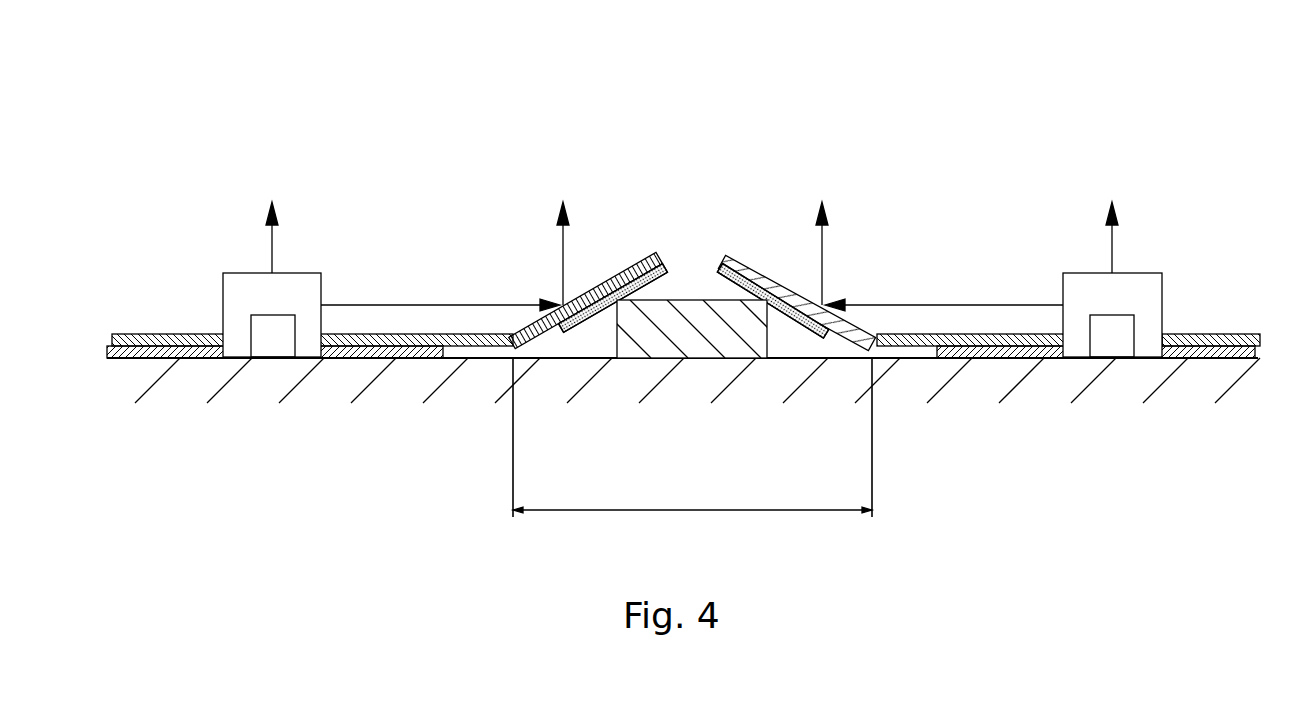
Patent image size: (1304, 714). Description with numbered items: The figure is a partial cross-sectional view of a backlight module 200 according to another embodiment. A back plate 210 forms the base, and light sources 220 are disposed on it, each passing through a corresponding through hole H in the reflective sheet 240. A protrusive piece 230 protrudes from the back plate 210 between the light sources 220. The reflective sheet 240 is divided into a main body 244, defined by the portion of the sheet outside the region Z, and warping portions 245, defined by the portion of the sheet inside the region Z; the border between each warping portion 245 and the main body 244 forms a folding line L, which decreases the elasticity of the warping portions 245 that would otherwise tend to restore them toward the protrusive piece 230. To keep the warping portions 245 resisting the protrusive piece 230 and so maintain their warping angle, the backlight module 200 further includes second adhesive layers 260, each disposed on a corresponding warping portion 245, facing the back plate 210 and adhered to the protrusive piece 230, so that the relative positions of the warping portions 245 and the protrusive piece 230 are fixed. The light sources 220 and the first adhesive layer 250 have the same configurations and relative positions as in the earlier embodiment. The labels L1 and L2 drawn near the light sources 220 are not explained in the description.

The backlight module 200 is at (123, 128).
The back plate 210 is at (1090, 383).
The light sources 220 is at (1135, 283).
The protrusive piece 230 is at (688, 340).
The reflective sheet 240 is at (939, 220).
The main body 244 is at (910, 337).
The warping portions 245 is at (772, 241).
The first adhesive layer 250 is at (397, 358).
The second adhesive layers 260 is at (577, 327).
The through holes H is at (1168, 329).
The folding line L is at (508, 335).
The first light L1 is at (273, 248).
The second light L2 is at (438, 305).
The region Z is at (799, 525).